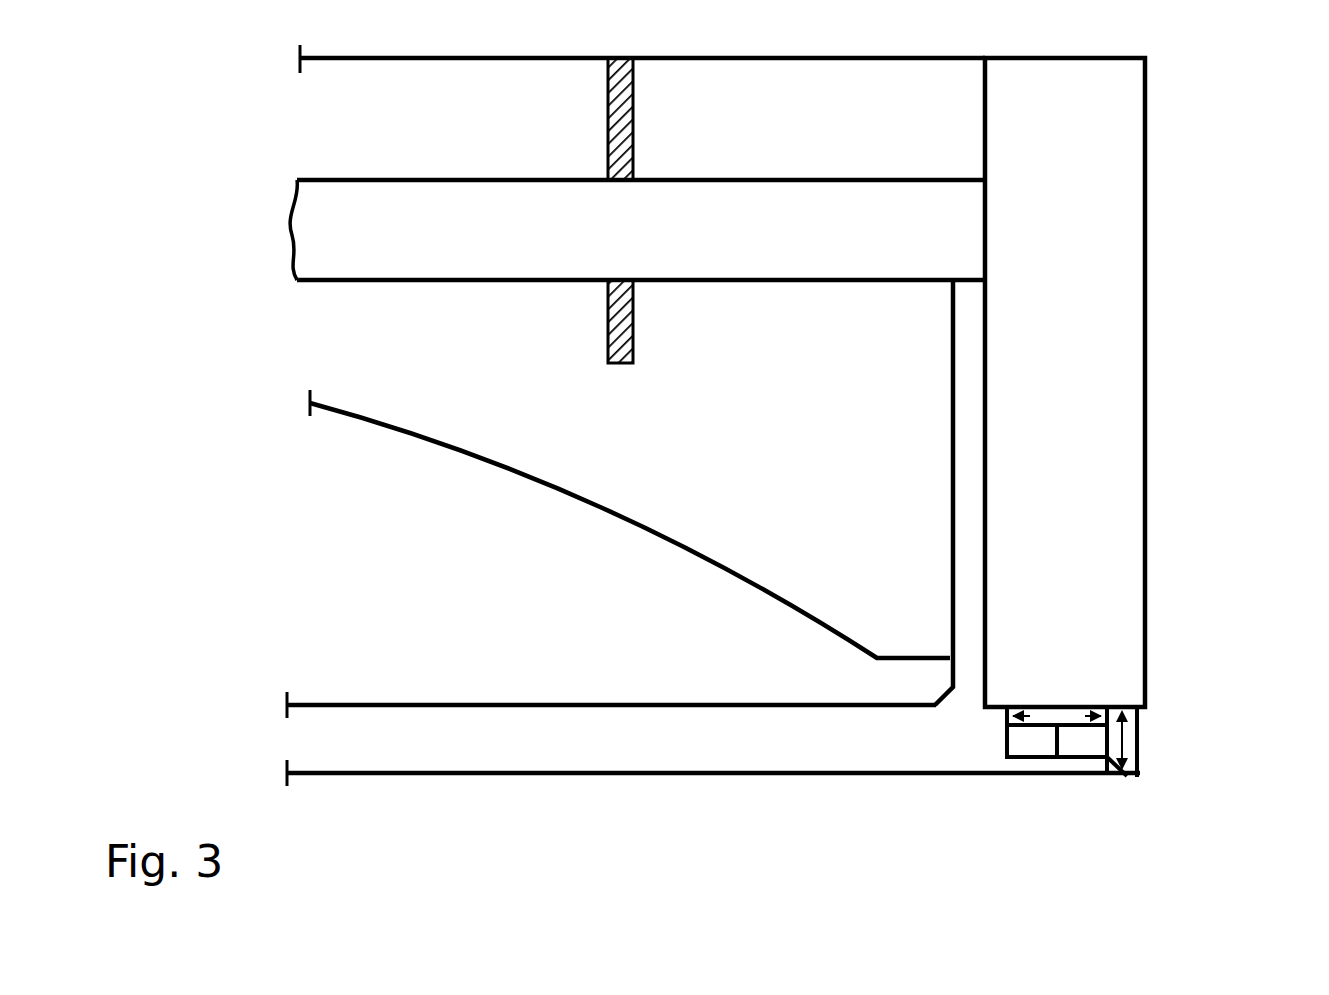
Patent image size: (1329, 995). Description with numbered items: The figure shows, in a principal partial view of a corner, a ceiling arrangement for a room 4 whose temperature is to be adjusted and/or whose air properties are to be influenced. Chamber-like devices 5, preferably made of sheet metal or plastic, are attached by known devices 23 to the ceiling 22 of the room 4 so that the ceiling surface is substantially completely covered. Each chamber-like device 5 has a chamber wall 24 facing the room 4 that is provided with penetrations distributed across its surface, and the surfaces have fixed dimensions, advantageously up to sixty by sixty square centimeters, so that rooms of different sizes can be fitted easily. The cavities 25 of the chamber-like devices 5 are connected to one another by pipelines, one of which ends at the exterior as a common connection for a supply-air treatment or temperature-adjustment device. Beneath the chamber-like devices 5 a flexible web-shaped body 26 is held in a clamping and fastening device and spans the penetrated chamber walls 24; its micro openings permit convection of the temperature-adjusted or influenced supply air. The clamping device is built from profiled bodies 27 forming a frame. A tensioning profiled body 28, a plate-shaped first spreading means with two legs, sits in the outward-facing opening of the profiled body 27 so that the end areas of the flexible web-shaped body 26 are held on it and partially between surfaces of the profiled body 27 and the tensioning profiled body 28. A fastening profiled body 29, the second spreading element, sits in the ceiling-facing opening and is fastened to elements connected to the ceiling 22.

The room 4 is at (504, 870).
The chamber-like device 5 is at (665, 535).
The ceiling 22 is at (493, 60).
The device 23 is at (908, 308).
The chamber wall 24 is at (397, 698).
The cavity 25 is at (532, 634).
The flexible web-shaped body 26 is at (808, 774).
The profiled body 27 is at (1020, 758).
The tensioning profiled body 28 is at (1140, 735).
The fastening profiled body 29 is at (1060, 705).